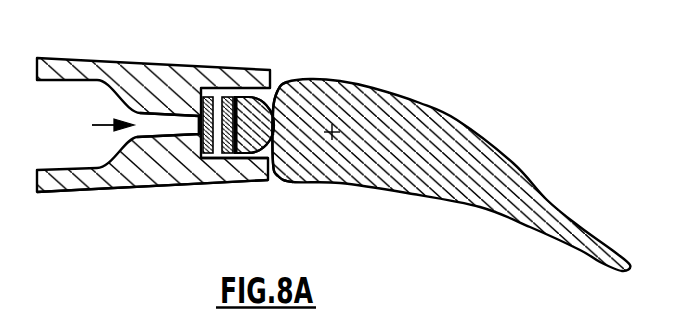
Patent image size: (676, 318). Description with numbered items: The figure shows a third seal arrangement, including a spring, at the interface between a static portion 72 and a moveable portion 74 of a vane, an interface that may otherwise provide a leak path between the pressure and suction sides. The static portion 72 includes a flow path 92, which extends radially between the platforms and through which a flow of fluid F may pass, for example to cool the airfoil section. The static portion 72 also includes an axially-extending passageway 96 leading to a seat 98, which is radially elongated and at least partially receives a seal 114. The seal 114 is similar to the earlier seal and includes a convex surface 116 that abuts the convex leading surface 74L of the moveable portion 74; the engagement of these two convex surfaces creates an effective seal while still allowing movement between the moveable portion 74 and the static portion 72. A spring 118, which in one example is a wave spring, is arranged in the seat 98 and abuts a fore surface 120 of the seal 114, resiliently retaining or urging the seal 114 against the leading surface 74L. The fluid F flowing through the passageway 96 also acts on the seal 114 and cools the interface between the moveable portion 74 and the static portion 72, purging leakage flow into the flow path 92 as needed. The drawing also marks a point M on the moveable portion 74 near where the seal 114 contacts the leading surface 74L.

The static portion 72 is at (58, 184).
The moveable portion 74 is at (443, 128).
The leading surface 74L is at (277, 180).
The flow path 92 is at (60, 130).
The axially-extending passageway 96 is at (162, 124).
The seat 98 is at (243, 95).
The seal 114 is at (262, 110).
The convex surface 116 is at (273, 121).
The spring 118 is at (199, 158).
The fore surface 120 is at (232, 99).
The reference point M is at (334, 138).
The fluid F is at (100, 125).